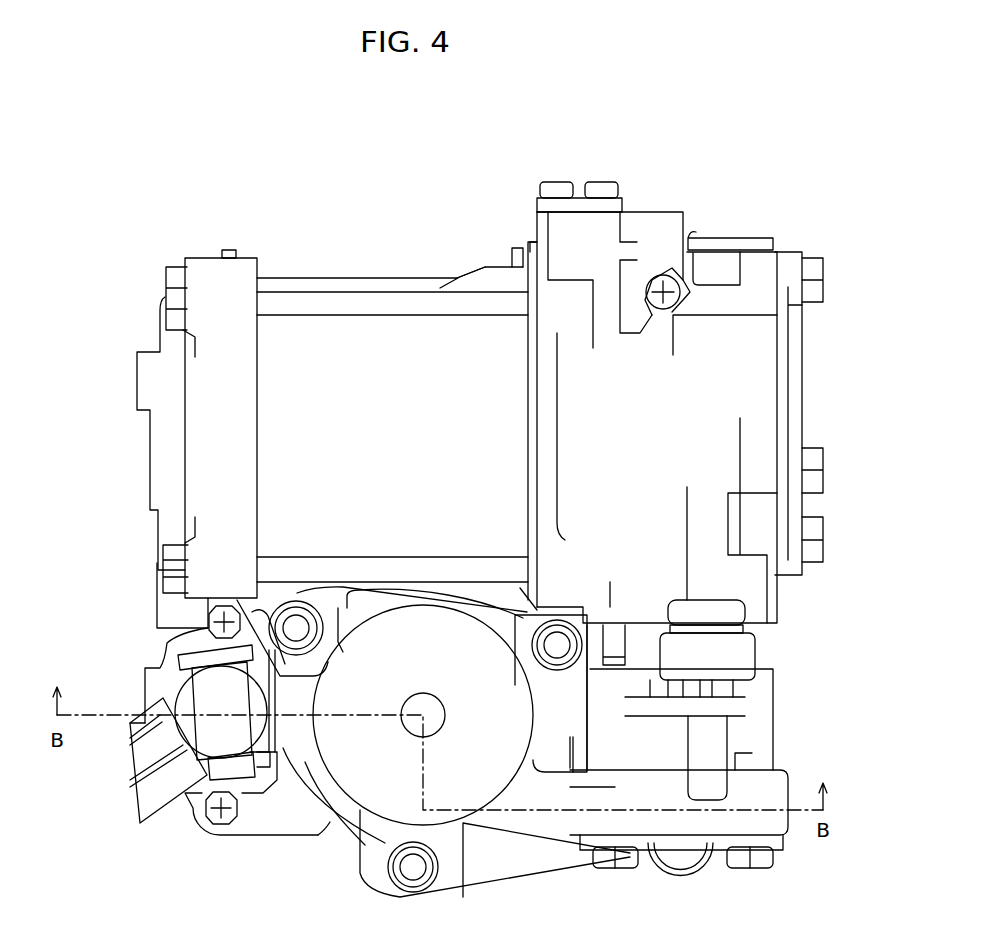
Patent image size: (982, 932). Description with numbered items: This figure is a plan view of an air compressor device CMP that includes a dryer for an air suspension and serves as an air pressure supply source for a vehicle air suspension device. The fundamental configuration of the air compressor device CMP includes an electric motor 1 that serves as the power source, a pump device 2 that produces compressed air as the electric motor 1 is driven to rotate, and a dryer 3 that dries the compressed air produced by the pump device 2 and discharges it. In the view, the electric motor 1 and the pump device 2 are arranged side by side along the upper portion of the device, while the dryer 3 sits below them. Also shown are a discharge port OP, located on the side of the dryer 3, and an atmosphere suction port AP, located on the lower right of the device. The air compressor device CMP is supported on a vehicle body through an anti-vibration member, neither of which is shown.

The electric motor 1 is at (327, 327).
The pump device 2 is at (735, 337).
The dryer 3 is at (367, 773).
The air compressor device CMP is at (461, 262).
The atmosphere suction port AP is at (710, 742).
The discharge port OP is at (297, 723).